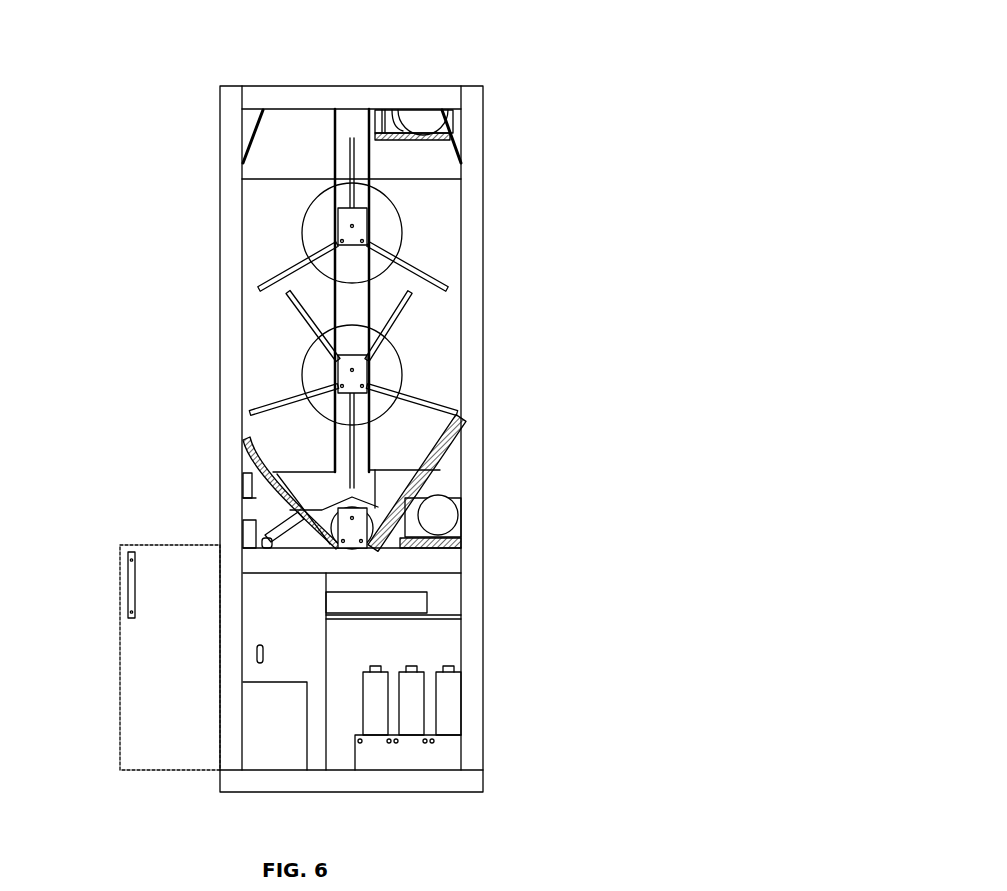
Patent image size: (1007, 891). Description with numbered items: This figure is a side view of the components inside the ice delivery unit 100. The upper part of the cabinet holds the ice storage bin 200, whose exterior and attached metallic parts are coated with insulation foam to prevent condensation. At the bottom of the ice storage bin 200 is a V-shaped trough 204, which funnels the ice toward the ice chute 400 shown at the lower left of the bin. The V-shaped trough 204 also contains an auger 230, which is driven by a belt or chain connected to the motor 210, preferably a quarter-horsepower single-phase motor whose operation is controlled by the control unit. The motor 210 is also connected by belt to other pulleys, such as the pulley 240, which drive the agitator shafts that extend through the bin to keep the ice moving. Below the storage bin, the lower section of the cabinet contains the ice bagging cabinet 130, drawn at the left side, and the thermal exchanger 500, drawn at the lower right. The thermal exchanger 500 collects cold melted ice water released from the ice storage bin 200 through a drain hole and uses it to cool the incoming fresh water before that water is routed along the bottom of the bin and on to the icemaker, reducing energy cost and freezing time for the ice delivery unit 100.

The ice delivery unit 100 is at (562, 92).
The ice storage bin 200 is at (425, 206).
The pulley 240 is at (410, 377).
The V-shaped trough 204 is at (435, 472).
The auger 230 is at (383, 525).
The motor 210 is at (435, 522).
The ice chute 400 is at (291, 529).
The ice bagging cabinet 130 is at (282, 608).
The thermal exchanger 500 is at (300, 720).